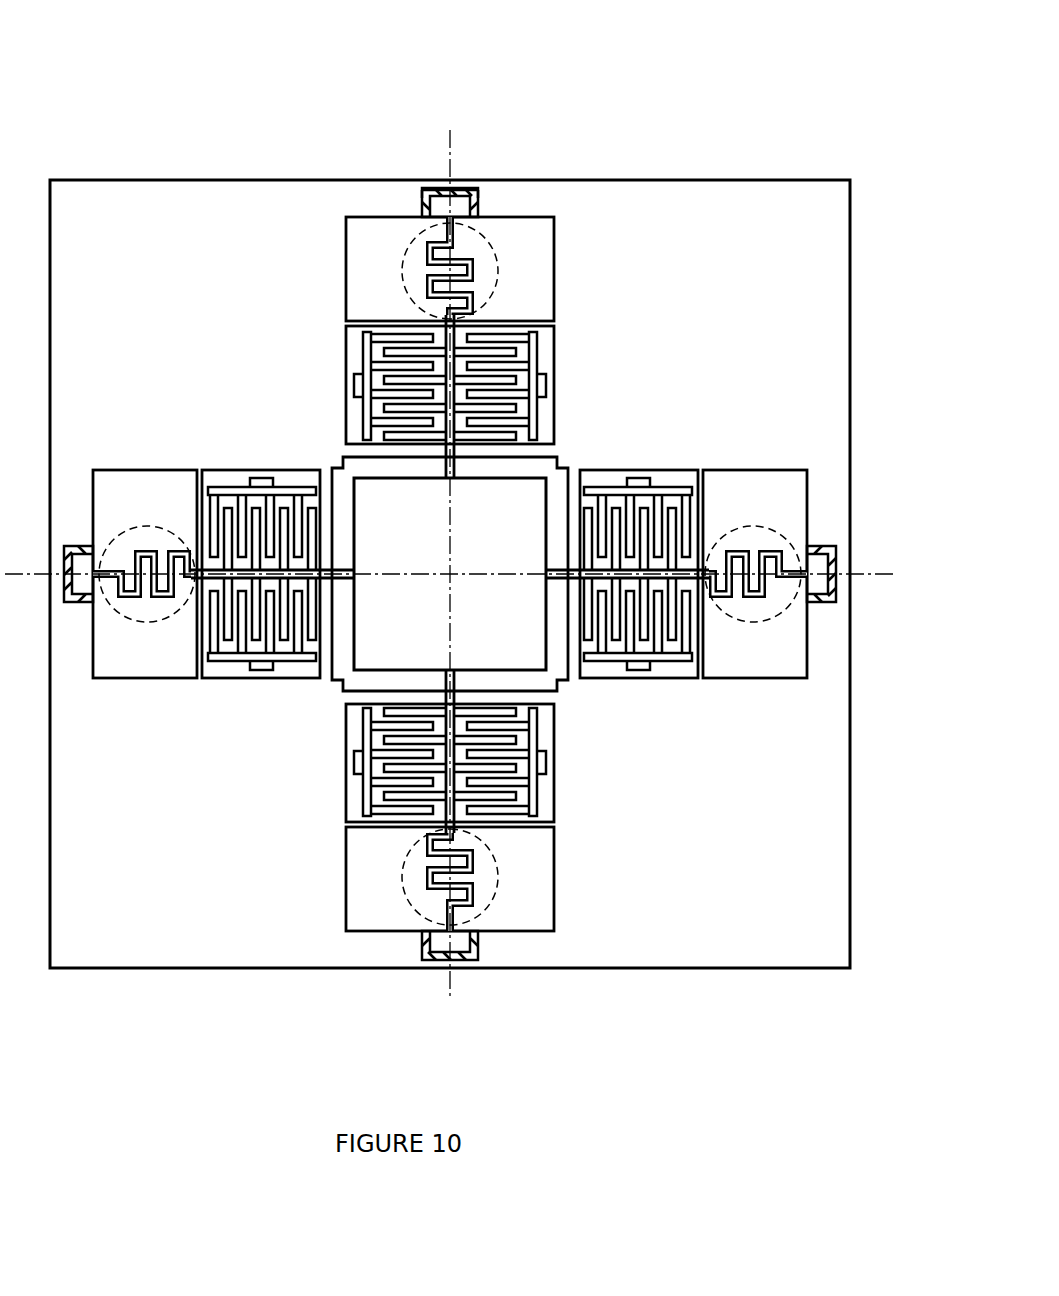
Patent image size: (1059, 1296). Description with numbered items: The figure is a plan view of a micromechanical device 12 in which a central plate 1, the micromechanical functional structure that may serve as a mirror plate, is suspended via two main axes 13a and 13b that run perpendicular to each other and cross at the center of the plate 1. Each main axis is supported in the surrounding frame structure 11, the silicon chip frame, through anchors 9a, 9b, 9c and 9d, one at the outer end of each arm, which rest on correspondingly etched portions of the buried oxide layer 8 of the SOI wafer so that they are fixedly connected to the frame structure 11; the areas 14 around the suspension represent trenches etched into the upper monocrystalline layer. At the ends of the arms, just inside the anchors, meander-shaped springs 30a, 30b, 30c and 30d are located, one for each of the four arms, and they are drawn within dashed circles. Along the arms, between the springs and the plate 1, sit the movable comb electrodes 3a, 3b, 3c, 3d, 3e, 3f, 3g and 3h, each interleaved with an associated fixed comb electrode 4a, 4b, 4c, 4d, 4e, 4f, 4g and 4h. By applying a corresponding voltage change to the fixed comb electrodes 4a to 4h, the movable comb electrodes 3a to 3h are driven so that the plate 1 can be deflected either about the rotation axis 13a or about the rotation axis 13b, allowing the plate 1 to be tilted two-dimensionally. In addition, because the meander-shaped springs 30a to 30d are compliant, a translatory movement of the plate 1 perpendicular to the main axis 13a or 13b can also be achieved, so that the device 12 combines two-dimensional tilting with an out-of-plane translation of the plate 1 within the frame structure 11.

The plate 1 is at (530, 497).
The movable comb electrode 3a is at (258, 478).
The movable comb electrode 3b is at (260, 670).
The movable comb electrode 3c is at (383, 351).
The movable comb electrode 3d is at (513, 400).
The movable comb electrode 3e is at (640, 506).
The movable comb electrode 3f is at (662, 648).
The movable comb electrode 3g is at (513, 746).
The movable comb electrode 3h is at (383, 746).
The fixed comb electrode 4a is at (222, 510).
The fixed comb electrode 4b is at (226, 640).
The fixed comb electrode 4c is at (385, 368).
The fixed comb electrode 4d is at (513, 363).
The fixed comb electrode 4e is at (668, 512).
The fixed comb electrode 4f is at (660, 650).
The fixed comb electrode 4g is at (513, 775).
The fixed comb electrode 4h is at (385, 771).
The oxide layer 8 is at (466, 185).
The anchor 9a is at (80, 548).
The anchor 9b is at (430, 205).
The anchor 9c is at (822, 548).
The anchor 9d is at (462, 990).
The frame structure 11 is at (797, 192).
The micromechanical device 12 is at (715, 102).
The main axis 13a is at (870, 570).
The main axis 13b is at (446, 130).
The area 14 is at (540, 232).
The meander-shaped spring 30a is at (150, 530).
The meander-shaped spring 30b is at (410, 272).
The meander-shaped spring 30c is at (755, 528).
The meander-shaped spring 30d is at (410, 872).